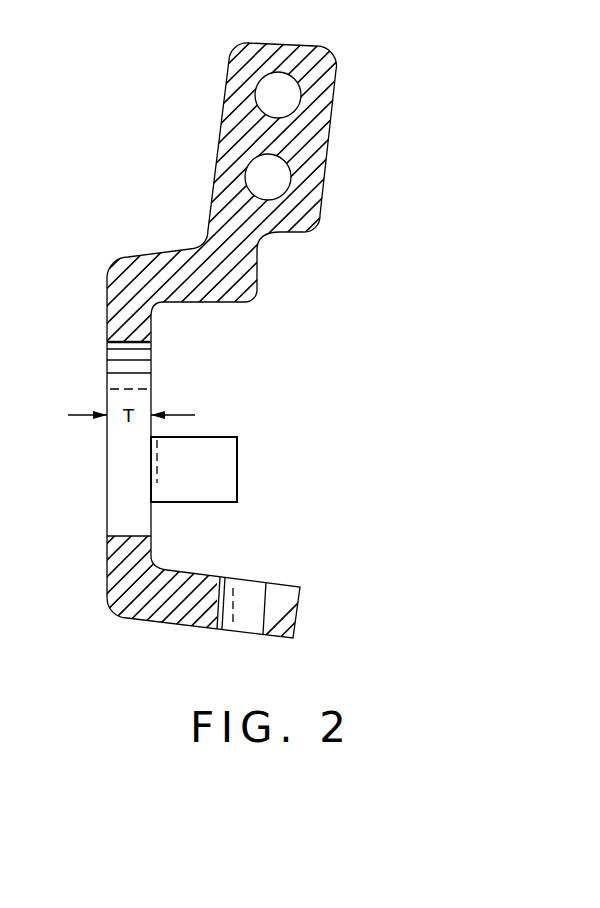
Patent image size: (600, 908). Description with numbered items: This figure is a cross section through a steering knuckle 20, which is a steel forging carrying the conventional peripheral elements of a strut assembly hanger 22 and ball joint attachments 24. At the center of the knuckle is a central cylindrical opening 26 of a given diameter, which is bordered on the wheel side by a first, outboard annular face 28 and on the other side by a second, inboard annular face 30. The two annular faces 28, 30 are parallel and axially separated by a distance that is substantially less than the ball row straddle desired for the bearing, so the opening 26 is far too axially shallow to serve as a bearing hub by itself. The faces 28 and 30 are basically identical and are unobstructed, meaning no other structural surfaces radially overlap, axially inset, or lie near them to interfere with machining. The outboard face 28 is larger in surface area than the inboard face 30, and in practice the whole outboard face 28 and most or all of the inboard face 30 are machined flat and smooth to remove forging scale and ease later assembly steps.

The steering knuckle 20 is at (183, 245).
The strut assembly hanger 22 is at (237, 133).
The ball joint attachments 24 is at (220, 475).
The central cylindrical opening 26 is at (125, 535).
The first, outboard annular face 28 is at (107, 315).
The second, inboard annular face 30 is at (151, 328).